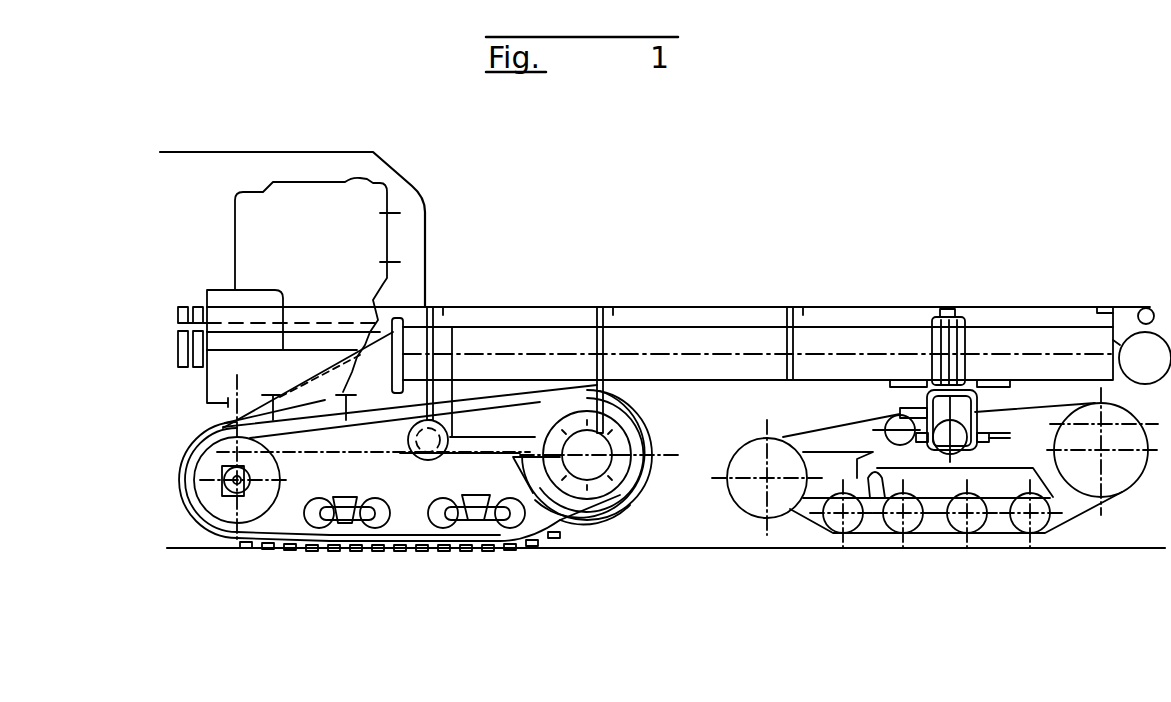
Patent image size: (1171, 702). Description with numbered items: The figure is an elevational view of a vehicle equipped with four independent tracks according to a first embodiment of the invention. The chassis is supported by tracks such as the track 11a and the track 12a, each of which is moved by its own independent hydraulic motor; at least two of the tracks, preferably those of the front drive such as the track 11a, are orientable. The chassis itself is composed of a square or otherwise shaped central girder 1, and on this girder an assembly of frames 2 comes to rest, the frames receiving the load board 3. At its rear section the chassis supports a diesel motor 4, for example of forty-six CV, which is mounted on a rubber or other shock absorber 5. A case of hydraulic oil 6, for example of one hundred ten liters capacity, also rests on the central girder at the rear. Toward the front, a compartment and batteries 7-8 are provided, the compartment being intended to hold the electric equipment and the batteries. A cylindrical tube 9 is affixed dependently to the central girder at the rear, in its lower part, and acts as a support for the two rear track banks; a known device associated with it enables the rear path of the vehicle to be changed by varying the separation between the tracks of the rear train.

The central girder 1 is at (550, 340).
The frames 2 is at (433, 318).
The load board 3 is at (1020, 302).
The diesel motor 4 is at (393, 227).
The shock absorber 5 is at (345, 394).
The case of hydraulic oil 6 is at (497, 367).
The compartment and batteries 7-8 is at (948, 364).
The cylindrical tube 9 is at (442, 457).
The track 11a is at (985, 533).
The track 12a is at (420, 555).